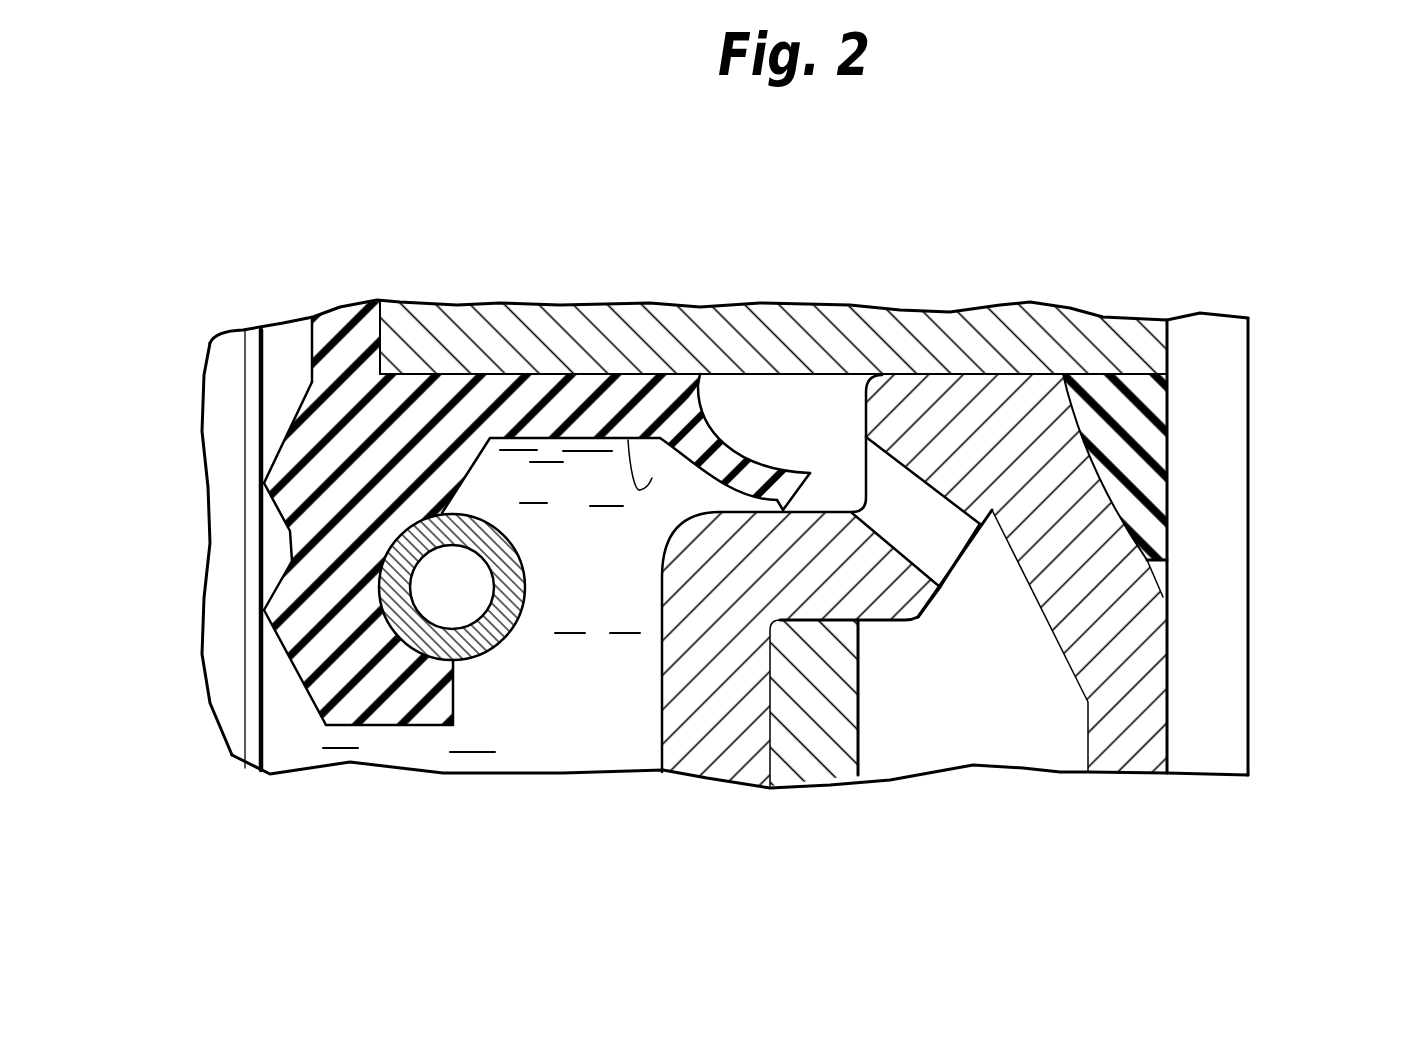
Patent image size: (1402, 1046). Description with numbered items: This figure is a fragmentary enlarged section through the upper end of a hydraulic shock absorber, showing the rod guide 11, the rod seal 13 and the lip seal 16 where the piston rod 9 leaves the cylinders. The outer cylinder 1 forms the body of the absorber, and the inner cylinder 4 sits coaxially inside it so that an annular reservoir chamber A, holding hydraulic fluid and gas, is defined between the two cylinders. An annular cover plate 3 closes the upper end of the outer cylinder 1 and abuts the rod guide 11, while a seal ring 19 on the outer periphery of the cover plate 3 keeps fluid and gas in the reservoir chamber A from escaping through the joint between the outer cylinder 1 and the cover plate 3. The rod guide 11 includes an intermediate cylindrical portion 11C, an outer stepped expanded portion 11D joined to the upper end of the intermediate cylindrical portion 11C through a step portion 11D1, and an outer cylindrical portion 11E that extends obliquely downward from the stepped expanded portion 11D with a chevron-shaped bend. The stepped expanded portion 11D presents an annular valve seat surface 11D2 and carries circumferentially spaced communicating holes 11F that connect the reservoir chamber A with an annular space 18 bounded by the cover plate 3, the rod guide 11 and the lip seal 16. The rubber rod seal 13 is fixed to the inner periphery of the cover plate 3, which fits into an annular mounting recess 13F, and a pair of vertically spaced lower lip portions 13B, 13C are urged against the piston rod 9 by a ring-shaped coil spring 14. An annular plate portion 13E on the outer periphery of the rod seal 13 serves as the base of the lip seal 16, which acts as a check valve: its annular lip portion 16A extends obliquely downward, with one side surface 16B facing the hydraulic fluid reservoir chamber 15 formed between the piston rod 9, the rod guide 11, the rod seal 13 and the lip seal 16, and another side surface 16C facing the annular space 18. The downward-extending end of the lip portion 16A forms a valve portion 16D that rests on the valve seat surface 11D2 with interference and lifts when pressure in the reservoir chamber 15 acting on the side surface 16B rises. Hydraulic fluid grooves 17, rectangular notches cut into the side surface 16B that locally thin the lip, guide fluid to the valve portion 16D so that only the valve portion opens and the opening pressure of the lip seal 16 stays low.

The outer cylinder 1 is at (1236, 503).
The cover plate 3 is at (567, 300).
The inner cylinder 4 is at (830, 760).
The piston rod 9 is at (214, 417).
The rod guide 11 is at (1170, 668).
The intermediate cylindrical portion 11C is at (688, 747).
The outer stepped expanded portion 11D is at (920, 447).
The step portion 11D1 is at (820, 568).
The valve seat surface 11D2 is at (759, 508).
The outer cylindrical portion 11E is at (1167, 600).
The communicating holes 11F is at (1052, 370).
The rod seal 13 is at (300, 349).
The lower lip portion 13B is at (264, 483).
The lower lip portion 13C is at (264, 610).
The annular plate portion 13E is at (533, 405).
The mounting recess 13F is at (438, 368).
The coil spring 14 is at (398, 630).
The hydraulic fluid reservoir chamber 15 is at (597, 722).
The lip seal 16 is at (681, 423).
The lip portion 16A is at (752, 470).
The one side surface 16B is at (628, 436).
The another side surface 16C is at (778, 470).
The valve portion 16D is at (793, 513).
The hydraulic fluid grooves 17 is at (732, 482).
The annular space 18 is at (816, 423).
The seal ring 19 is at (1145, 432).
The reservoir chamber A is at (970, 738).